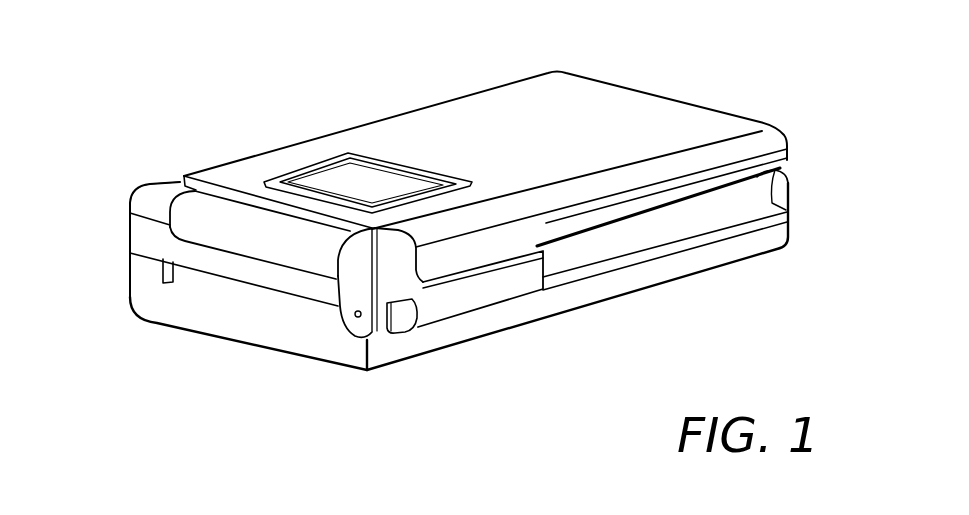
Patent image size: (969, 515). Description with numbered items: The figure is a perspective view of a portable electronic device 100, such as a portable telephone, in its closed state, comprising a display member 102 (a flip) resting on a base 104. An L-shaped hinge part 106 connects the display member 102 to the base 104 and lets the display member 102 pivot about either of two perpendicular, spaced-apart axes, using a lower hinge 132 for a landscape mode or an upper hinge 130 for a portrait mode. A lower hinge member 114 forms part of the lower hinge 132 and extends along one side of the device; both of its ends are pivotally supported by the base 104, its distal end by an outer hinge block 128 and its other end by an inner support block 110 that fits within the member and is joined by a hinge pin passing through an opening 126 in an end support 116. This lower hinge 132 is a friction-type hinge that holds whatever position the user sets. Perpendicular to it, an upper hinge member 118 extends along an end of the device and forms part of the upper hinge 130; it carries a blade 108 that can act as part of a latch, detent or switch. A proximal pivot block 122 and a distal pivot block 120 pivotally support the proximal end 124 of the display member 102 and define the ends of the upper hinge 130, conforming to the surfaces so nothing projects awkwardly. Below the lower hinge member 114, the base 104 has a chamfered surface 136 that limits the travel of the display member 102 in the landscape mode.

The portable electronic device 100 is at (345, 73).
The display member 102 is at (669, 101).
The base 104 is at (788, 245).
The hinge part 106 is at (140, 238).
The blade 108 is at (162, 278).
The inner support block 110 is at (393, 307).
The lower hinge member 114 is at (538, 273).
The end support 116 is at (395, 336).
The upper hinge member 118 is at (230, 263).
The distal pivot block 120 is at (151, 201).
The proximal pivot block 122 is at (356, 254).
The proximal end of the display member 124 is at (223, 210).
The opening 126 is at (355, 318).
The outer hinge block 128 is at (668, 232).
The upper hinge 130 is at (187, 172).
The lower hinge 132 is at (442, 310).
The chamfered surface 136 is at (500, 310).